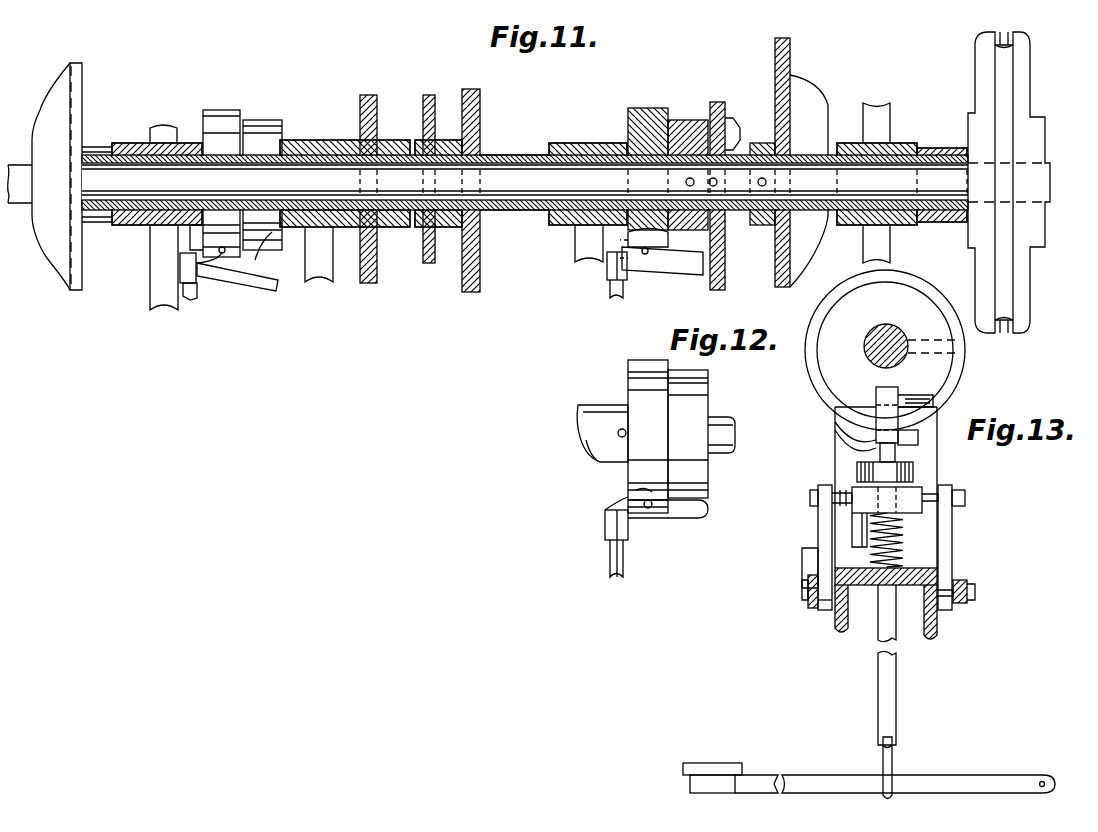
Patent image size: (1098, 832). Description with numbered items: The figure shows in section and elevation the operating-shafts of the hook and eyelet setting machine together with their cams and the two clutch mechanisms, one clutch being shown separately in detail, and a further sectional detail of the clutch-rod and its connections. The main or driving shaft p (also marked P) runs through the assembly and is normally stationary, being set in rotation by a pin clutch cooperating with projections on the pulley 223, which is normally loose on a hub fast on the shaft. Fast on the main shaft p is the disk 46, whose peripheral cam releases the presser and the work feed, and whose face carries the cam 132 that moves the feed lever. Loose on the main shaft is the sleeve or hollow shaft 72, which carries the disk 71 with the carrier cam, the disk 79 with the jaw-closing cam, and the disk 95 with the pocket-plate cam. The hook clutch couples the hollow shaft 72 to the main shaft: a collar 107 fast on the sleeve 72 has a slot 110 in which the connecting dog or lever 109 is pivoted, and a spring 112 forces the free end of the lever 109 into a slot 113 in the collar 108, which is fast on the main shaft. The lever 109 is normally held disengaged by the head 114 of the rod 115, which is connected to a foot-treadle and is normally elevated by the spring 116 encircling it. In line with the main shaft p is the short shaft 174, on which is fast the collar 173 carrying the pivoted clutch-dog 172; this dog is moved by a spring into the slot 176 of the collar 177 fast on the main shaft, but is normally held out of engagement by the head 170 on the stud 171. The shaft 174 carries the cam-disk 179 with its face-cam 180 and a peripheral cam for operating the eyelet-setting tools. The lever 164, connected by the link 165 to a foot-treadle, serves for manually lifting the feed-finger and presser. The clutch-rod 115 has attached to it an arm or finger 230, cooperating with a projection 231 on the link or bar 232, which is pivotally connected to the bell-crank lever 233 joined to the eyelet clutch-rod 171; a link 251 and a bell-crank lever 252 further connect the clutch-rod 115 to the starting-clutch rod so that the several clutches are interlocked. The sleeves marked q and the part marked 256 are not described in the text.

In FIG. 11, the disk 46 is at (726, 242).
In FIG. 11, the disk 71 is at (481, 249).
In FIG. 11, the sleeve or hollow shaft 72 is at (503, 156).
In FIG. 11, the disk 79 is at (377, 258).
In FIG. 11, the disk 95 is at (430, 262).
In FIG. 11, the collar 107 is at (636, 115).
In FIG. 12, the collar 107 is at (640, 352).
In FIG. 11, the collar 108 is at (684, 118).
In FIG. 12, the collar 108 is at (709, 389).
In FIG. 11, the connecting dog or lever 109 is at (668, 270).
In FIG. 12, the connecting dog or lever 109 is at (693, 520).
In FIG. 13, the connecting dog or lever 109 is at (876, 410).
In FIG. 11, the slot 110 is at (660, 258).
In FIG. 11, the spring 112 is at (608, 262).
In FIG. 12, the spring 112 is at (620, 482).
In FIG. 11, the slot 113 is at (733, 262).
In FIG. 13, the head 114 is at (836, 426).
In FIG. 13, the rod 115 is at (896, 455).
In FIG. 13, the spring 116 is at (898, 535).
In FIG. 11, the cam 132 is at (736, 122).
In FIG. 13, the lever 164 is at (897, 748).
In FIG. 13, the link 165 is at (893, 770).
In FIG. 11, the head 170 is at (182, 271).
In FIG. 11, the stud or rod 171 is at (190, 300).
In FIG. 11, the clutch-dog 172 is at (232, 274).
In FIG. 11, the collar 173 is at (226, 106).
In FIG. 11, the short shaft 174 is at (128, 223).
In FIG. 11, the slot 176 is at (262, 255).
In FIG. 11, the collar 177 is at (266, 120).
In FIG. 11, the cam-disk 179 is at (82, 239).
In FIG. 11, the face-cam 180 is at (60, 265).
In FIG. 11, the pulley 223 is at (1030, 325).
In FIG. 13, the arm or finger 230 is at (858, 523).
In FIG. 13, the arm or projection 231 is at (802, 552).
In FIG. 13, the link or bar 232 is at (804, 590).
In FIG. 13, the bell-crank lever 233 is at (818, 608).
In FIG. 13, the link 251 is at (957, 580).
In FIG. 13, the bell-crank lever 252 is at (946, 548).
In FIG. 13, the bolt 256 is at (953, 498).
In FIG. 11, the main shaft P is at (806, 175).
In FIG. 12, the main shaft P is at (736, 440).
In FIG. 13, the main shaft p is at (892, 328).
In FIG. 11, the sleeve q is at (305, 142).